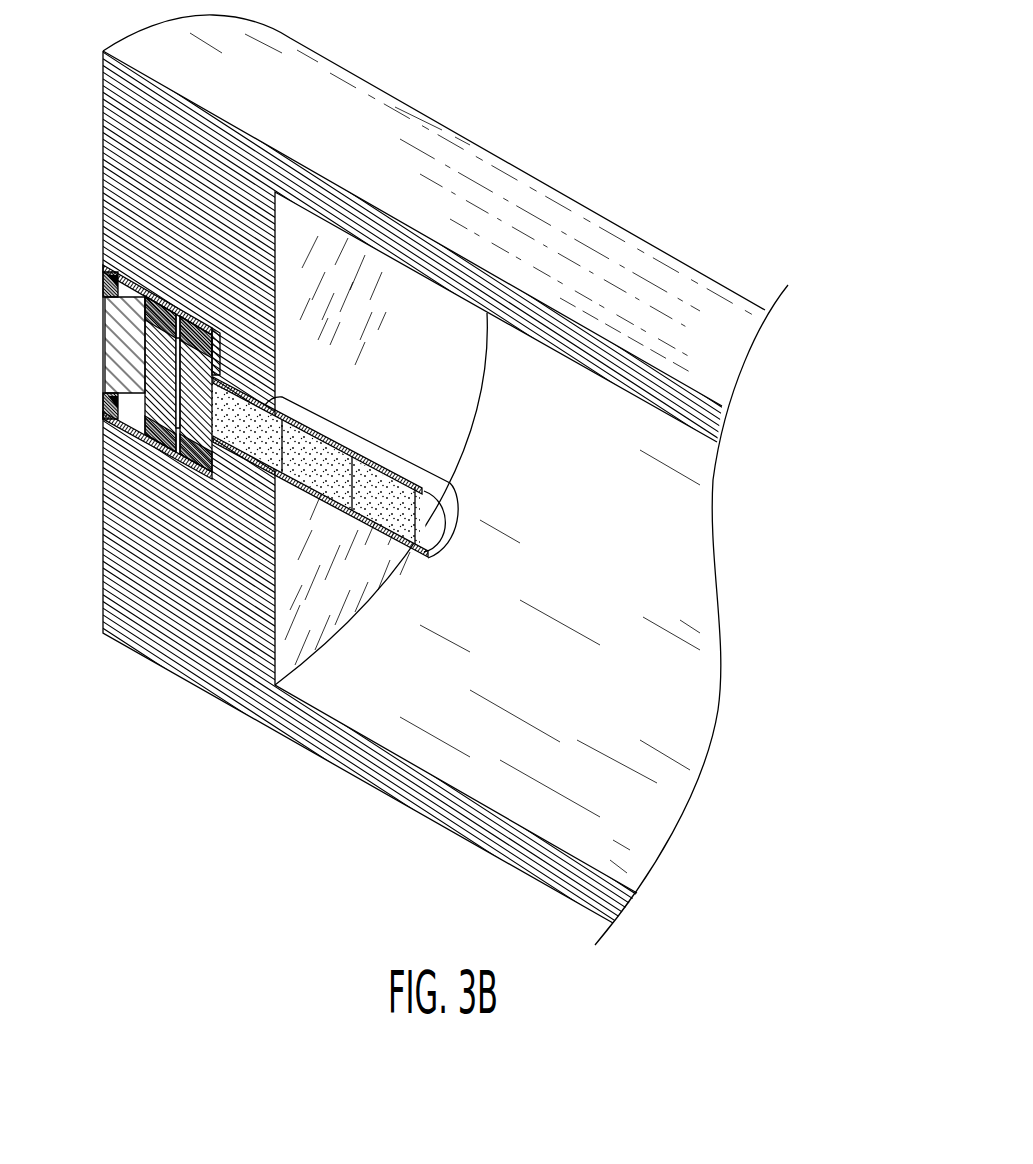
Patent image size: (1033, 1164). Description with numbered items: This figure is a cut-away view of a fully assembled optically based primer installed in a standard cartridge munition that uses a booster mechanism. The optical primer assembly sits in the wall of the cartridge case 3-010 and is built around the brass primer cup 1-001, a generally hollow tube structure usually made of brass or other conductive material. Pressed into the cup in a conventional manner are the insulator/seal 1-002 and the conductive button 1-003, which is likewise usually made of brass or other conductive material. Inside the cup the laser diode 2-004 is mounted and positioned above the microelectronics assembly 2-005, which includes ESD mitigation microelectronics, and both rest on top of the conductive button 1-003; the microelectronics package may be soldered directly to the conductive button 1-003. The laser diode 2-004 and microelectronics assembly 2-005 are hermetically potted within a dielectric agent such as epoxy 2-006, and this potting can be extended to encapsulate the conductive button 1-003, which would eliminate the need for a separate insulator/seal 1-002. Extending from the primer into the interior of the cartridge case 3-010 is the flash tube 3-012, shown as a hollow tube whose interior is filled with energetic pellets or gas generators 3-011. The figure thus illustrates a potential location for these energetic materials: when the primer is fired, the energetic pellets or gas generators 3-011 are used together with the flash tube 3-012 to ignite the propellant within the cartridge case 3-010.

The cartridge case 3-010 is at (180, 168).
The energetic pellets or gas generators 3-011 is at (430, 538).
The flash tube 3-012 is at (396, 452).
The brass primer cup 1-001 is at (103, 266).
The insulator/seal 1-002 is at (103, 413).
The conductive button 1-003 is at (112, 332).
The laser diode 2-004 is at (178, 282).
The microelectronics assembly 2-005 is at (150, 370).
The epoxy 2-006 is at (178, 445).